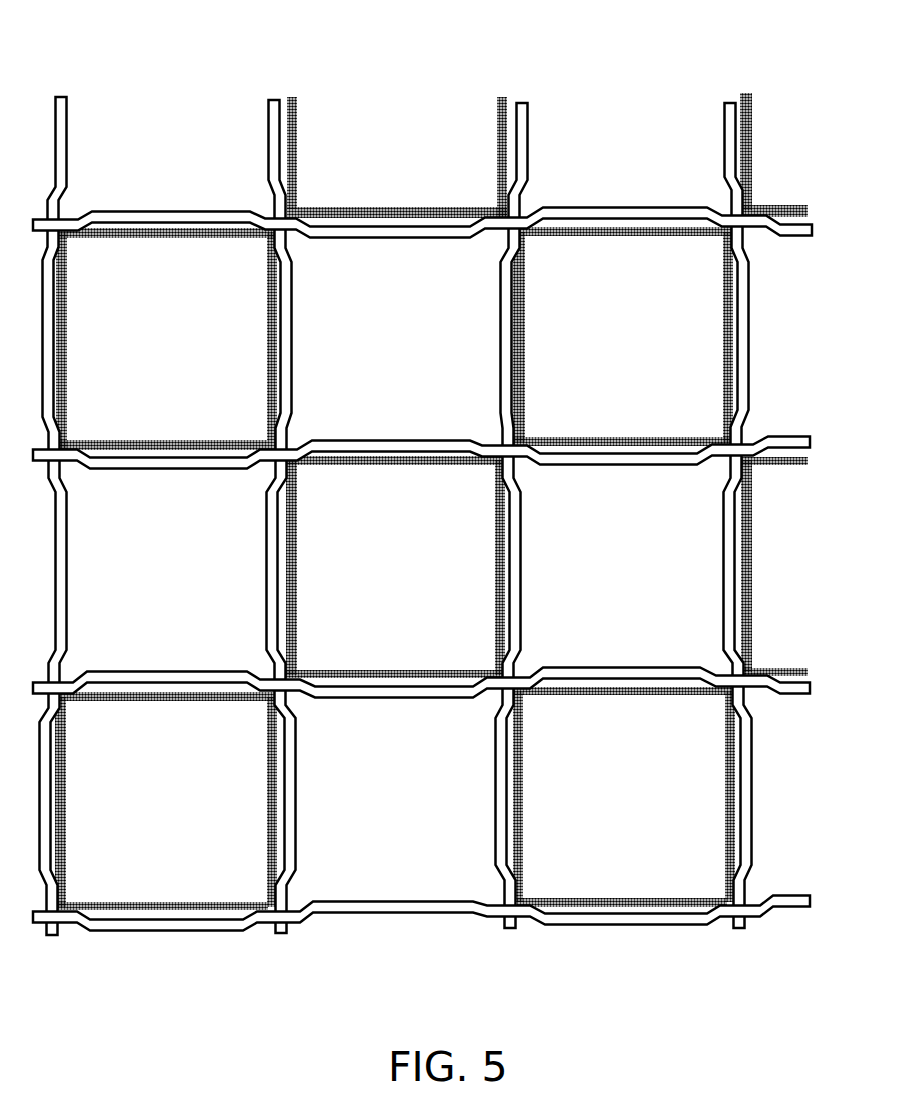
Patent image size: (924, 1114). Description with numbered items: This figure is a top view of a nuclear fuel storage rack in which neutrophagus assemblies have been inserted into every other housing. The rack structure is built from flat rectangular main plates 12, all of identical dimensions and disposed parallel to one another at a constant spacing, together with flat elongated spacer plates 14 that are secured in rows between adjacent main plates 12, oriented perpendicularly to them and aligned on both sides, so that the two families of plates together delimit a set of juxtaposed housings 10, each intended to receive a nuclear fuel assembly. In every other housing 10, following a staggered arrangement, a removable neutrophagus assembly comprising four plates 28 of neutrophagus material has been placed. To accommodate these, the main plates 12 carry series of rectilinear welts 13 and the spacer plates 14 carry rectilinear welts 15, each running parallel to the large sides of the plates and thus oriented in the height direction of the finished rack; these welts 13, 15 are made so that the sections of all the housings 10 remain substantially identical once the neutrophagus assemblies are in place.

The housing 10 is at (177, 171).
The main plate 12 is at (411, 245).
The welt 13 is at (77, 467).
The spacer plate 14 is at (305, 323).
The welt 15 is at (517, 480).
The plate of neutrophagus material 28 is at (353, 208).